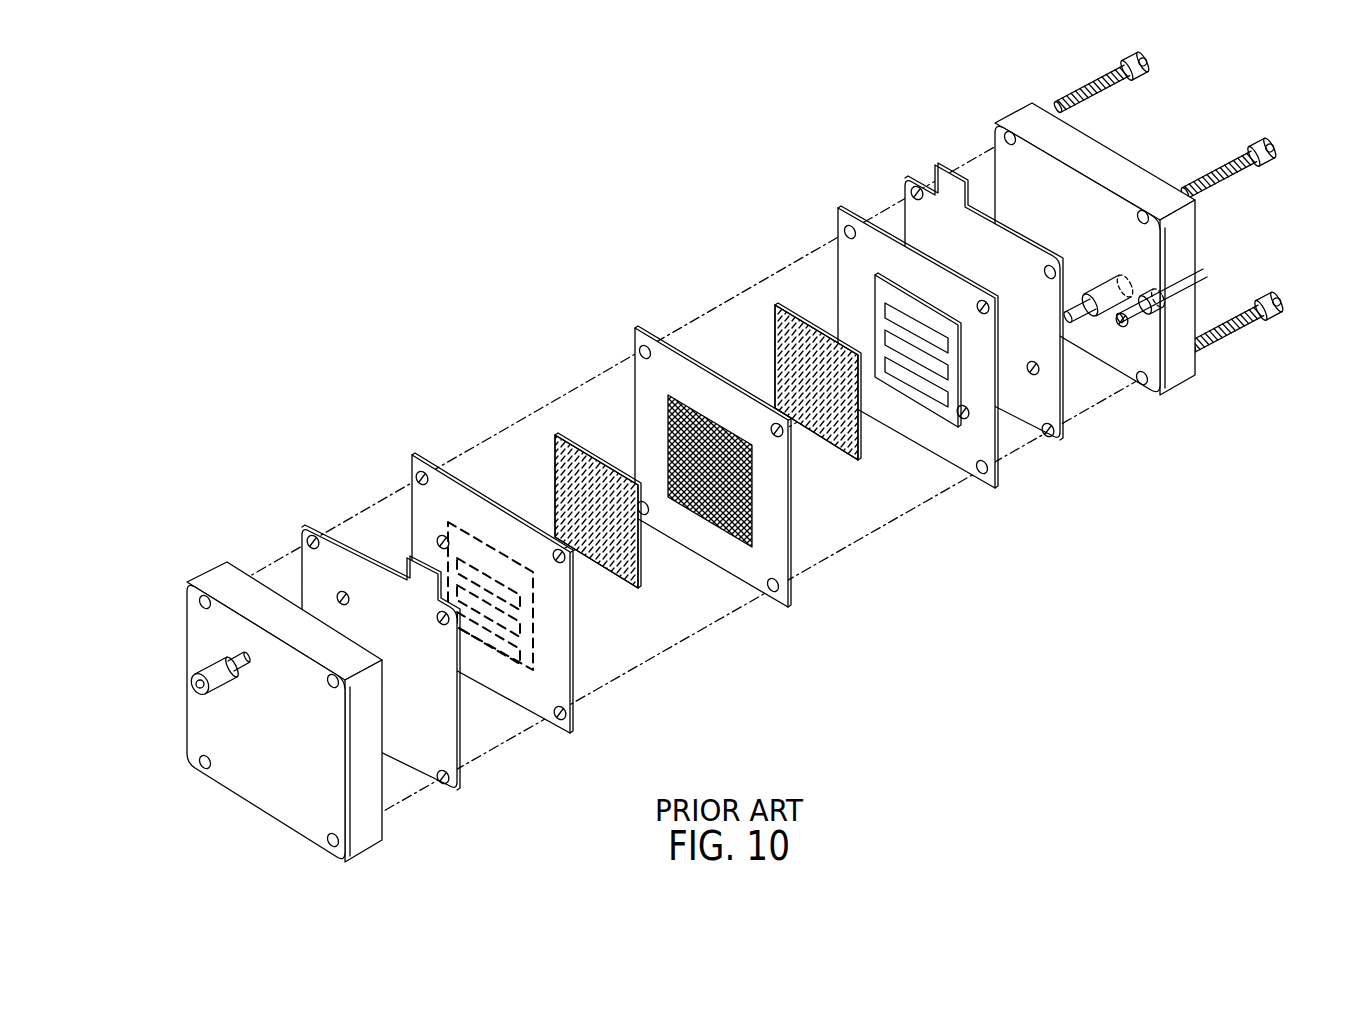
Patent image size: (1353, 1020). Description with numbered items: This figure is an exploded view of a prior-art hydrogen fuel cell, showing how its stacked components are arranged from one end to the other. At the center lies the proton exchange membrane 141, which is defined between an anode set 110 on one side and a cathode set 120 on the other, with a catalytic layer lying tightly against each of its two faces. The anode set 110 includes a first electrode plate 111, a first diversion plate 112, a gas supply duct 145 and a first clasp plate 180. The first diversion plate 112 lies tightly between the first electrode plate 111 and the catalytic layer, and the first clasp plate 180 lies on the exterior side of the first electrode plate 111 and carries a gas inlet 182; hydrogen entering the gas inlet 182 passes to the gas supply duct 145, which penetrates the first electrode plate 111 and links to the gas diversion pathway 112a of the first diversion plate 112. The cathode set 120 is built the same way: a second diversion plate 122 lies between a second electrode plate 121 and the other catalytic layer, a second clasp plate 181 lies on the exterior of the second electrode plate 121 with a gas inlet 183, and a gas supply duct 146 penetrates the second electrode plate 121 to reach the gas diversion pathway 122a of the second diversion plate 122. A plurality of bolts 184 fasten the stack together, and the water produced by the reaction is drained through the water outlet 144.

The anode set 110 is at (471, 583).
The first electrode plate 111 is at (312, 527).
The first diversion plate 112 is at (526, 573).
The gas diversion pathway 112a is at (473, 557).
The cathode set 120 is at (927, 278).
The second electrode plate 121 is at (905, 232).
The second diversion plate 122 is at (895, 338).
The gas diversion pathway 122a is at (930, 393).
The proton exchange membrane 141 is at (752, 512).
The water outlet 144 is at (1118, 290).
The gas supply duct 145 is at (444, 536).
The gas supply duct 146 is at (1122, 326).
The first clasp plate 180 is at (186, 758).
The second clasp plate 181 is at (1152, 386).
The gas inlet 182 is at (191, 682).
The gas inlet 183 is at (1180, 296).
The bolts 184 is at (1262, 312).